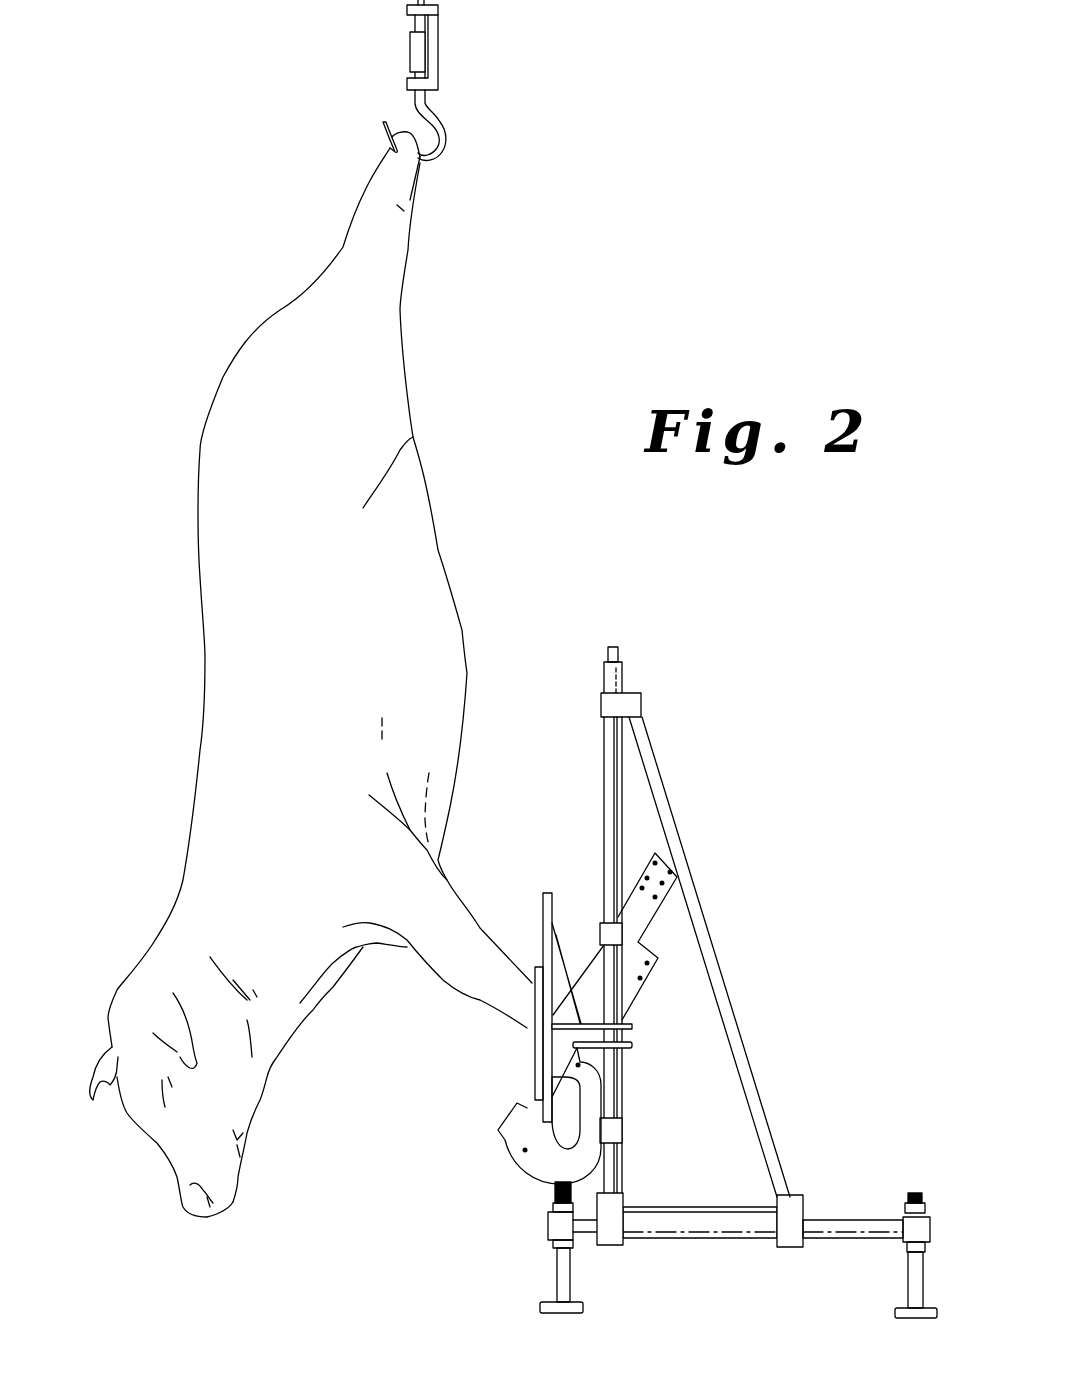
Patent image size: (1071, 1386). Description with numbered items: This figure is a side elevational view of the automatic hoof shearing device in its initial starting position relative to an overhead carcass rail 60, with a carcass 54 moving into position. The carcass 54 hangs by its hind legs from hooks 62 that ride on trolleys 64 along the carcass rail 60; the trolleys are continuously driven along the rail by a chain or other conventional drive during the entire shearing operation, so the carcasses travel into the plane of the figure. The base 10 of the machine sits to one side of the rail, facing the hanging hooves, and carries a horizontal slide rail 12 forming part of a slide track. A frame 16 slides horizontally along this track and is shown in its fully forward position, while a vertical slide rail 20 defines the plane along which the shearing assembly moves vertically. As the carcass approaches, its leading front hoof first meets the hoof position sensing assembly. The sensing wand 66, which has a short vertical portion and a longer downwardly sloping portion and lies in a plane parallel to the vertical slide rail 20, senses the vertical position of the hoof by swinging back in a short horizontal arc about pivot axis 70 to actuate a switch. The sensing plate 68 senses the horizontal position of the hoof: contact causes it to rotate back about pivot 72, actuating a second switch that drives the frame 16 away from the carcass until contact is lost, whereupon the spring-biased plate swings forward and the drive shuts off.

The base 10 is at (903, 1197).
The slide rail 12 is at (830, 1227).
The frame 16 is at (743, 1001).
The vertical slide rail 20 is at (607, 776).
The carcass 54 is at (208, 655).
The carcass rail 60 is at (410, 50).
The hook 62 is at (440, 135).
The trolley 64 is at (438, 27).
The sensing wand 66 is at (535, 1075).
The sensing plate 68 is at (543, 920).
The pivot axis 70 is at (632, 1026).
The pivot 72 is at (632, 1046).